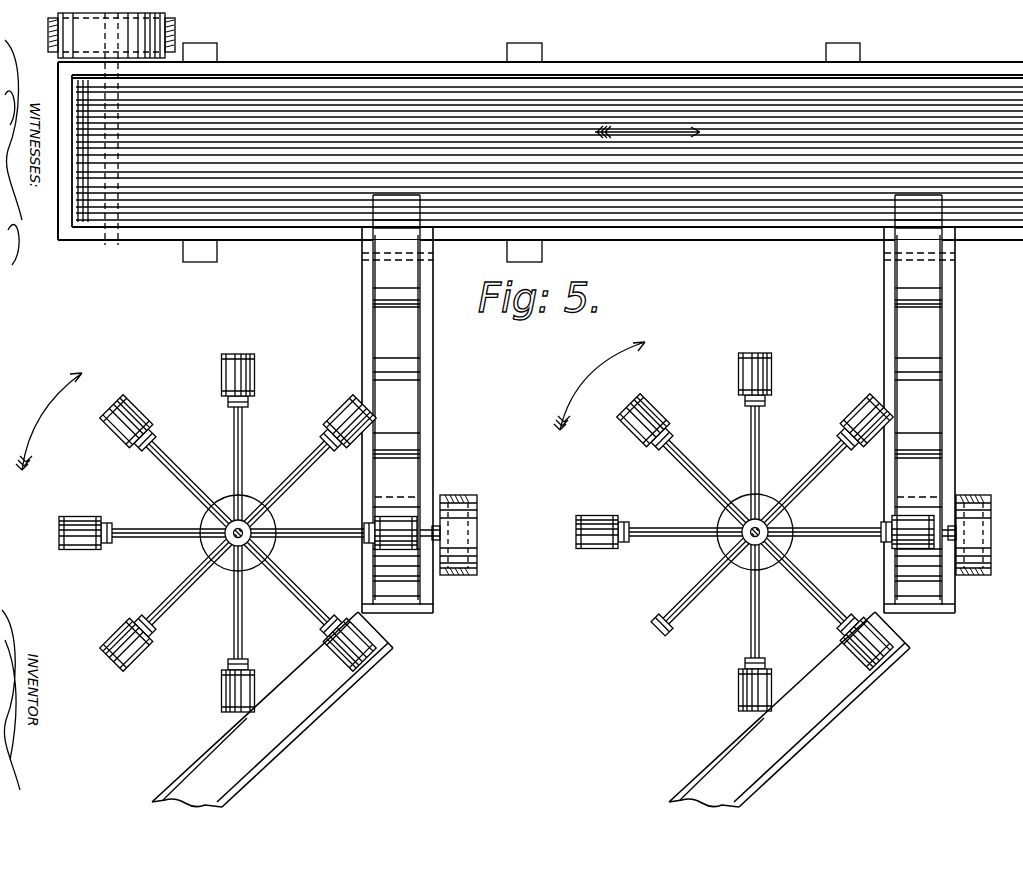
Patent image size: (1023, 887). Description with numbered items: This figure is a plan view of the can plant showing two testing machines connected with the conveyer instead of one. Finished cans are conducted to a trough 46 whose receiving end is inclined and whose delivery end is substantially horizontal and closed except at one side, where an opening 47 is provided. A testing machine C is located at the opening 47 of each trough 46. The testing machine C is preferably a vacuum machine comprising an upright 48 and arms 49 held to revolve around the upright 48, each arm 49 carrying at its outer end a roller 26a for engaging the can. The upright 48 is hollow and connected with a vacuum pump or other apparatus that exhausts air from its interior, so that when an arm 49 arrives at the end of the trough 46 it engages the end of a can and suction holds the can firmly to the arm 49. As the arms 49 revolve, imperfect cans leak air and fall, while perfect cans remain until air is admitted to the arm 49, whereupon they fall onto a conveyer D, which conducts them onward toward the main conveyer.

The roller 26a is at (245, 371).
The trough 46 is at (531, 709).
The opening 47 is at (279, 697).
The upright 48 is at (230, 566).
The arms 49 is at (242, 435).
The testing machine C is at (500, 532).
The conveyer D is at (433, 430).